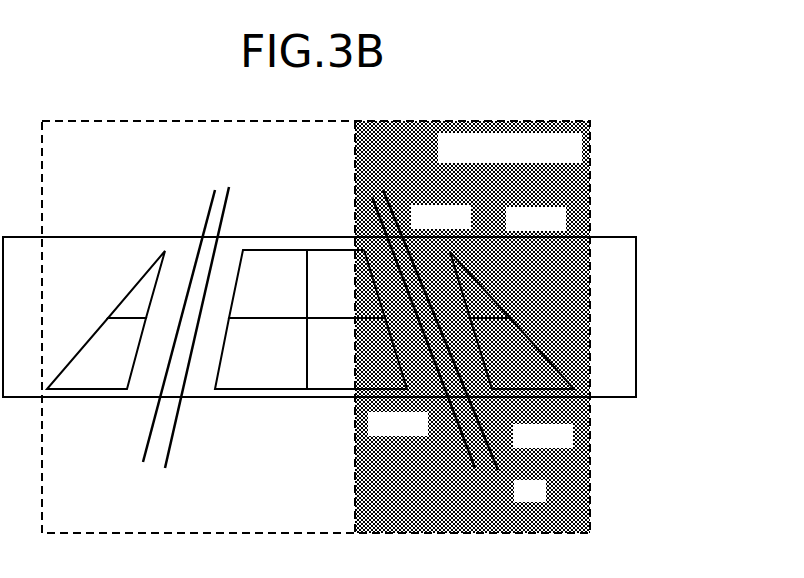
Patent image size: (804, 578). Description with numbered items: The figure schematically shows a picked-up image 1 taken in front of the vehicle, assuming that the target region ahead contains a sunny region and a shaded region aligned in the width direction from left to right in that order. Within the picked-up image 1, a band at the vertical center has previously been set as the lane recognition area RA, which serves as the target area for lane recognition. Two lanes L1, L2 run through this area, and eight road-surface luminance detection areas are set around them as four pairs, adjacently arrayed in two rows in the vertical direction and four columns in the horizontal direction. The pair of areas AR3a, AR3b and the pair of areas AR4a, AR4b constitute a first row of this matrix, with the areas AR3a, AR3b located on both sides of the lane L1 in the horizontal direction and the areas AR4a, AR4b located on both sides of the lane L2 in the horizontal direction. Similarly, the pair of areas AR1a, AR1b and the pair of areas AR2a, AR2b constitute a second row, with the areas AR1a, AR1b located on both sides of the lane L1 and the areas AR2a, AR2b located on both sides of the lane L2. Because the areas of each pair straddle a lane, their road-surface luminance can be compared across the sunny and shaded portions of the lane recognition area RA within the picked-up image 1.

The picked-up image 1 is at (590, 140).
The lane recognition area RA is at (617, 237).
The road-surface luminance detection area AR1a is at (110, 370).
The road-surface luminance detection area AR1b is at (260, 370).
The road-surface luminance detection area AR2a is at (515, 380).
The road-surface luminance detection area AR2b is at (372, 385).
The road-surface luminance detection area AR3a is at (143, 283).
The road-surface luminance detection area AR3b is at (273, 270).
The road-surface luminance detection area AR4a is at (473, 287).
The road-surface luminance detection area AR4b is at (367, 258).
The lane L1 is at (152, 459).
The lane L2 is at (487, 467).